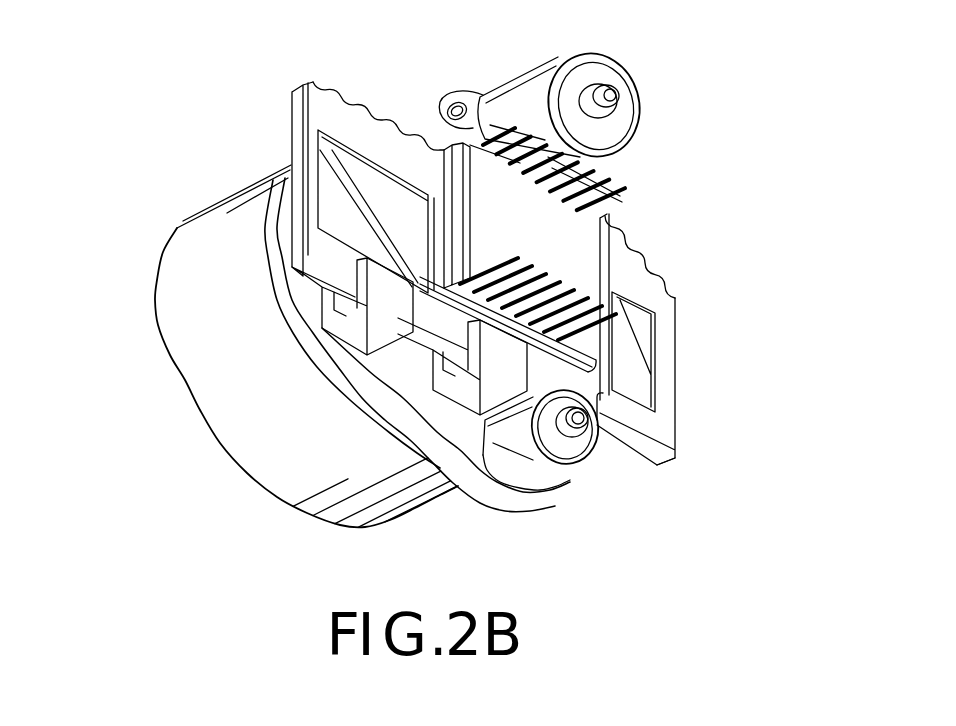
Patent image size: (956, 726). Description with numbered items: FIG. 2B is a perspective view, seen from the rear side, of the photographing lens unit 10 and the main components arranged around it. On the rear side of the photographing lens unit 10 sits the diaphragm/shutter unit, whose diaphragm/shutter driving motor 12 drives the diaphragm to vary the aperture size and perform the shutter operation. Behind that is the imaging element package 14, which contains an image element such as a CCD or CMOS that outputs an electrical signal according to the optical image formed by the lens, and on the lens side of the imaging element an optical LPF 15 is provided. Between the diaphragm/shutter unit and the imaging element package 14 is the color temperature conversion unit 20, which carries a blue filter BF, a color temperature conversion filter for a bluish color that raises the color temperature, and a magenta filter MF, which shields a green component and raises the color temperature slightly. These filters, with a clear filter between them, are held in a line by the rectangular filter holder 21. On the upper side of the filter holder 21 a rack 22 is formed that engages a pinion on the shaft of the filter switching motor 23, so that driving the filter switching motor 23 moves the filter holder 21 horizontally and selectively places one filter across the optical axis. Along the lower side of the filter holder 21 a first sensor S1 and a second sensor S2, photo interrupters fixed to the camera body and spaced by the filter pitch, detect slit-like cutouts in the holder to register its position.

The photographing lens unit 10 is at (206, 376).
The diaphragm/shutter driving motor 12 is at (552, 480).
The imaging element package 14 is at (635, 188).
The optical LPF (Low Pass Filter) 15 is at (438, 160).
The color temperature conversion unit 20 is at (657, 478).
The filter holder 21 is at (653, 298).
The rack 22 is at (340, 92).
The filter switching motor 23 is at (528, 76).
The blue filter BF is at (353, 180).
The magenta filter MF is at (640, 378).
The first sensor S1 is at (408, 403).
The second sensor S2 is at (360, 335).